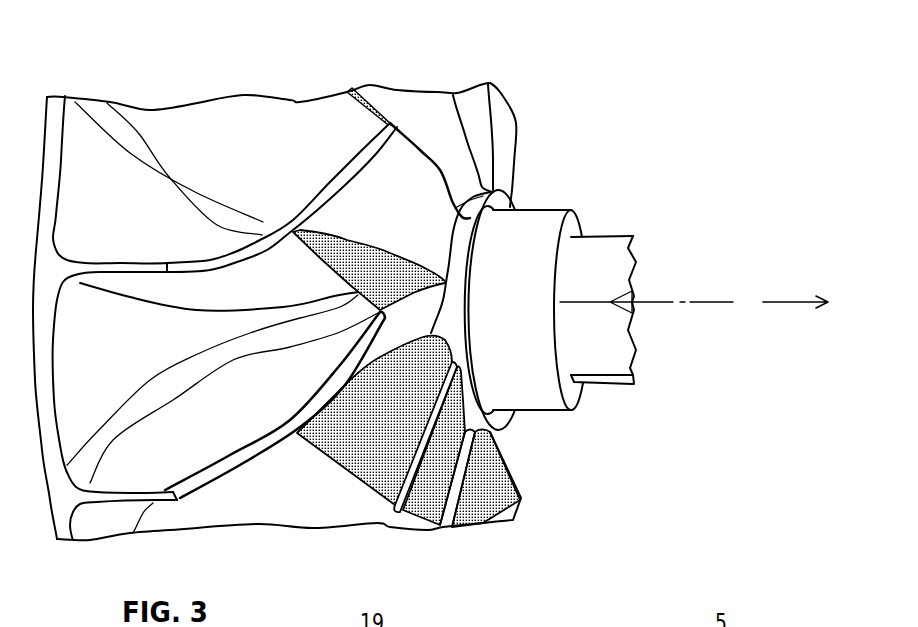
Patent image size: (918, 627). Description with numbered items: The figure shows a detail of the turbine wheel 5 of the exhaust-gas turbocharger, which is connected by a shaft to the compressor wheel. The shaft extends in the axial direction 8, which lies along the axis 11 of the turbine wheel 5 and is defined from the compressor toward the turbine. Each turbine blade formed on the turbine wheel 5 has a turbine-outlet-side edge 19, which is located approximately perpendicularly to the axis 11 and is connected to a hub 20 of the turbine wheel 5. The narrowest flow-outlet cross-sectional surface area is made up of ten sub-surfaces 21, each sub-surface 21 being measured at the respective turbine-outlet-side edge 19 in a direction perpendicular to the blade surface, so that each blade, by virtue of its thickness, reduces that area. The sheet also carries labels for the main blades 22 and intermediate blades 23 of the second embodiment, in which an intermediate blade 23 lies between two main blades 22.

The turbine wheel 5 is at (684, 85).
The axial direction 8 is at (787, 303).
The axis 11 is at (710, 302).
The turbine-outlet-side edge 19 is at (425, 146).
The hub 20 is at (510, 191).
The sub-surface 21 is at (370, 243).
The main blade 22 is at (225, 253).
The intermediate blade 23 is at (408, 481).